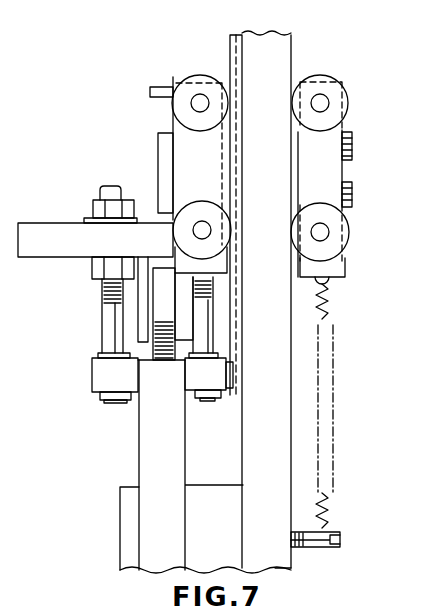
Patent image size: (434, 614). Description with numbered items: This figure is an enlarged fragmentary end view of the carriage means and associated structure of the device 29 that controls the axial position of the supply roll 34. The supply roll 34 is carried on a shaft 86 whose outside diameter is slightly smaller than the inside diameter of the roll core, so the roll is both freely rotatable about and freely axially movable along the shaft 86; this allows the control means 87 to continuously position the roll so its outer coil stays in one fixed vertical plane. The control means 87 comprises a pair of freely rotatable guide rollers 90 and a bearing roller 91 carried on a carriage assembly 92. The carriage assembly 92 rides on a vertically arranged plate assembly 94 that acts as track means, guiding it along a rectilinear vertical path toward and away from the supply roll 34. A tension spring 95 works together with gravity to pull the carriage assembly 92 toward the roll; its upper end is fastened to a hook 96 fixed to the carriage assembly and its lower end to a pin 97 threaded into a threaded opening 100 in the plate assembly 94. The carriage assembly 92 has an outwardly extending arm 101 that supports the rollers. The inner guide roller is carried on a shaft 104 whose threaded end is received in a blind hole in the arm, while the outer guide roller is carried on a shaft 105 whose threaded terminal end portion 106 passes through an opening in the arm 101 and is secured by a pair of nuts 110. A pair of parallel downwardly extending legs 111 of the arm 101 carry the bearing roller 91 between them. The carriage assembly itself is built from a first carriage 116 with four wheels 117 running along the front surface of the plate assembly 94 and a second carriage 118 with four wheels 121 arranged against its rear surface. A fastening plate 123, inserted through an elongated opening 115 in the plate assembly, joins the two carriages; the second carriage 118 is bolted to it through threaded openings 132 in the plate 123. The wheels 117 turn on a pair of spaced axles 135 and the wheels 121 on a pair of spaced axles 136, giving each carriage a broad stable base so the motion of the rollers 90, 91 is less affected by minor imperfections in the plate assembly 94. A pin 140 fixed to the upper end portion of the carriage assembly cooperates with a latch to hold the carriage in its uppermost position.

The device 29 is at (341, 58).
The supply roll 34 is at (140, 450).
The shaft 86 is at (120, 530).
The control means 87 is at (100, 401).
The guide rollers 90 is at (95, 378).
The bearing roller 91 is at (138, 350).
The carriage assembly 92 is at (172, 81).
The plate assembly 94 is at (288, 34).
The tension spring 95 is at (330, 505).
The hook 96 is at (333, 278).
The pin 97 is at (322, 548).
The threaded opening 100 is at (292, 560).
The arm 101 is at (33, 223).
The shaft 104 is at (208, 340).
The shaft 105 is at (107, 322).
The threaded terminal end portion 106 is at (104, 290).
The nuts 110 is at (96, 204).
The legs 111 is at (138, 307).
The elongated opening 115 is at (201, 166).
The first carriage 116 is at (172, 147).
The wheels 117 is at (218, 75).
The second carriage 118 is at (335, 170).
The wheels 121 is at (320, 75).
The fastening plate 123 is at (291, 143).
The threaded opening 132 is at (348, 135).
The axles 135 is at (197, 104).
The axles 136 is at (322, 103).
The pin 140 is at (150, 91).